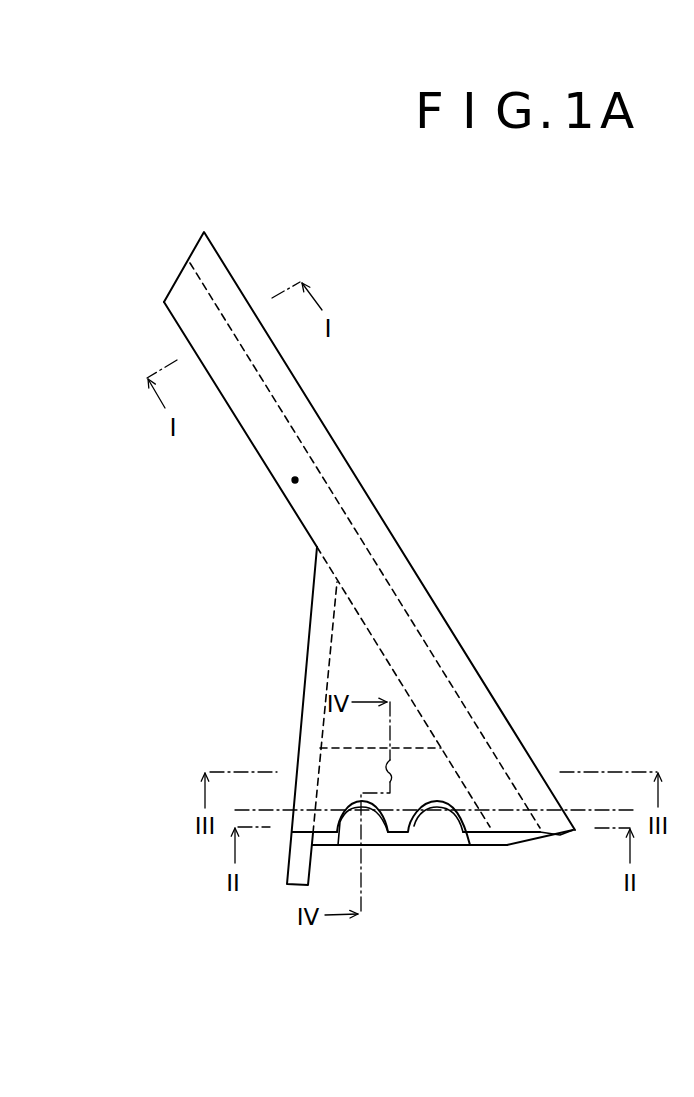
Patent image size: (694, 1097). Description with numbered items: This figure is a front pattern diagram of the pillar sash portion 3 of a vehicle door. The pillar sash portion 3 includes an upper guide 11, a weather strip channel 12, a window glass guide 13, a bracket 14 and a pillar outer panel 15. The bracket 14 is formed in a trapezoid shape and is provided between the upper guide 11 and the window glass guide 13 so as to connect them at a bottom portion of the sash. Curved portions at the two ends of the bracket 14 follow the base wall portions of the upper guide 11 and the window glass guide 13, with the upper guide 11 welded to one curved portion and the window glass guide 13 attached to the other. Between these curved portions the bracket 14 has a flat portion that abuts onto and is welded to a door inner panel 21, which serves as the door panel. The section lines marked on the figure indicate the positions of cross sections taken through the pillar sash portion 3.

The pillar sash portion 3 is at (417, 445).
The upper guide 11 is at (517, 845).
The weather strip channel 12 is at (557, 833).
The window glass guide 13 is at (292, 863).
The bracket 14 is at (467, 845).
The pillar outer panel 15 is at (295, 480).
The door inner panel 21 is at (590, 810).